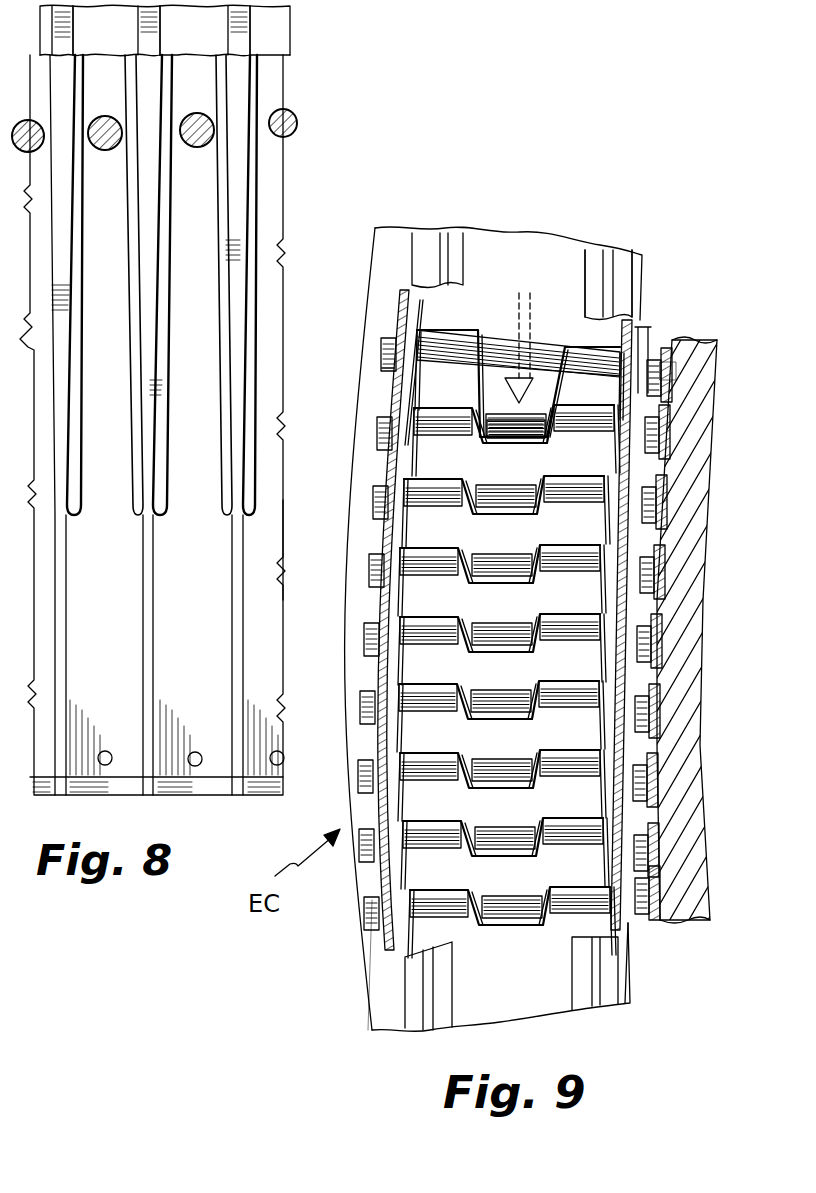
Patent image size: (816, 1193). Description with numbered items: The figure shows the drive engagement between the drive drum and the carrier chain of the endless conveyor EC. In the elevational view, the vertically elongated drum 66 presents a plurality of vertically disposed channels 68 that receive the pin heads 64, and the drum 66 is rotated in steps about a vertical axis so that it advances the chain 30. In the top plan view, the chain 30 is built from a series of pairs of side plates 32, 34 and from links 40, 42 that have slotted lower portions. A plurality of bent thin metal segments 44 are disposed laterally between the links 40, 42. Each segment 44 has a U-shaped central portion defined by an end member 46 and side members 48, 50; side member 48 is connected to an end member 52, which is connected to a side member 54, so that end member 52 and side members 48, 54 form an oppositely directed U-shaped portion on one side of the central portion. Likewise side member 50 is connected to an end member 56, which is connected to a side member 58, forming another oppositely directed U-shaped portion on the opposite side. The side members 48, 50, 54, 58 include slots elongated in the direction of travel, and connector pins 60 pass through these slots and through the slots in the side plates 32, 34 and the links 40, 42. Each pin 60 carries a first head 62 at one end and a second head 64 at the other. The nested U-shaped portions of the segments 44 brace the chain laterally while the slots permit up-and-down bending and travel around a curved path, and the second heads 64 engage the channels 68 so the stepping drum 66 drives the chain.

In FIG. 9, the chain 30 is at (356, 756).
In FIG. 9, the side plate 32 is at (645, 862).
In FIG. 9, the side plate 34 is at (380, 884).
In FIG. 9, the link 40 is at (632, 409).
In FIG. 9, the link 42 is at (382, 378).
In FIG. 9, the bent thin metal segment 44 is at (470, 317).
In FIG. 9, the end member 46 is at (503, 446).
In FIG. 9, the side member 48 is at (492, 325).
In FIG. 9, the side member 50 is at (550, 385).
In FIG. 9, the end member 52 is at (447, 295).
In FIG. 9, the side member 54 is at (405, 300).
In FIG. 9, the end member 56 is at (588, 303).
In FIG. 9, the side member 58 is at (622, 360).
In FIG. 9, the connector pin 60 is at (535, 322).
In FIG. 9, the first head 62 is at (380, 345).
In FIG. 8, the second head 64 is at (41, 126).
In FIG. 9, the second head 64 is at (675, 372).
In FIG. 8, the drum 66 is at (285, 548).
In FIG. 9, the drum 66 is at (687, 698).
In FIG. 8, the channel 68 is at (105, 65).
In FIG. 9, the channel 68 is at (655, 505).